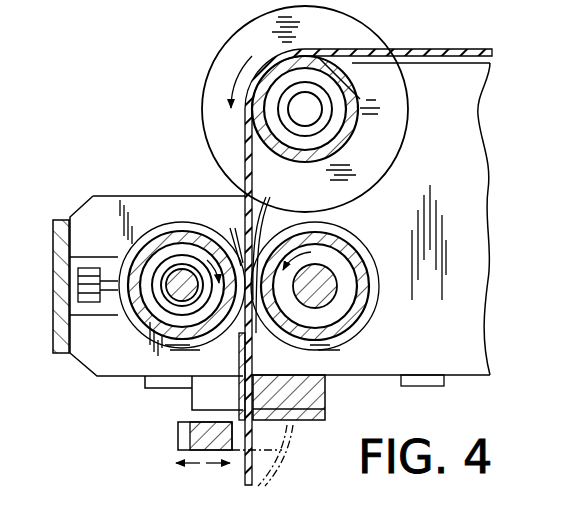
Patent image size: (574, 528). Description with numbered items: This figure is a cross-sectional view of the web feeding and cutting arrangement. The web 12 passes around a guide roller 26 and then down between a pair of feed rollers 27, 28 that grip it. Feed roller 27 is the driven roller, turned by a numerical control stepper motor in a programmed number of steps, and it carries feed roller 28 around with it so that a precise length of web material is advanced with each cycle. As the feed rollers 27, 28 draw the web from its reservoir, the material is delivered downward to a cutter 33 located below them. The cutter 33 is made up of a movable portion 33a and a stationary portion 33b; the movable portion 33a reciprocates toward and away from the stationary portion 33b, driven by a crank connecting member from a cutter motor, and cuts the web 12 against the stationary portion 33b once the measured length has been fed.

The web 12 is at (477, 52).
The guide roller 26 is at (358, 121).
The feed roller 27 is at (385, 292).
The feed roller 28 is at (155, 330).
The cutter 33 is at (226, 430).
The movable portion 33a is at (180, 442).
The stationary portion 33b is at (312, 397).